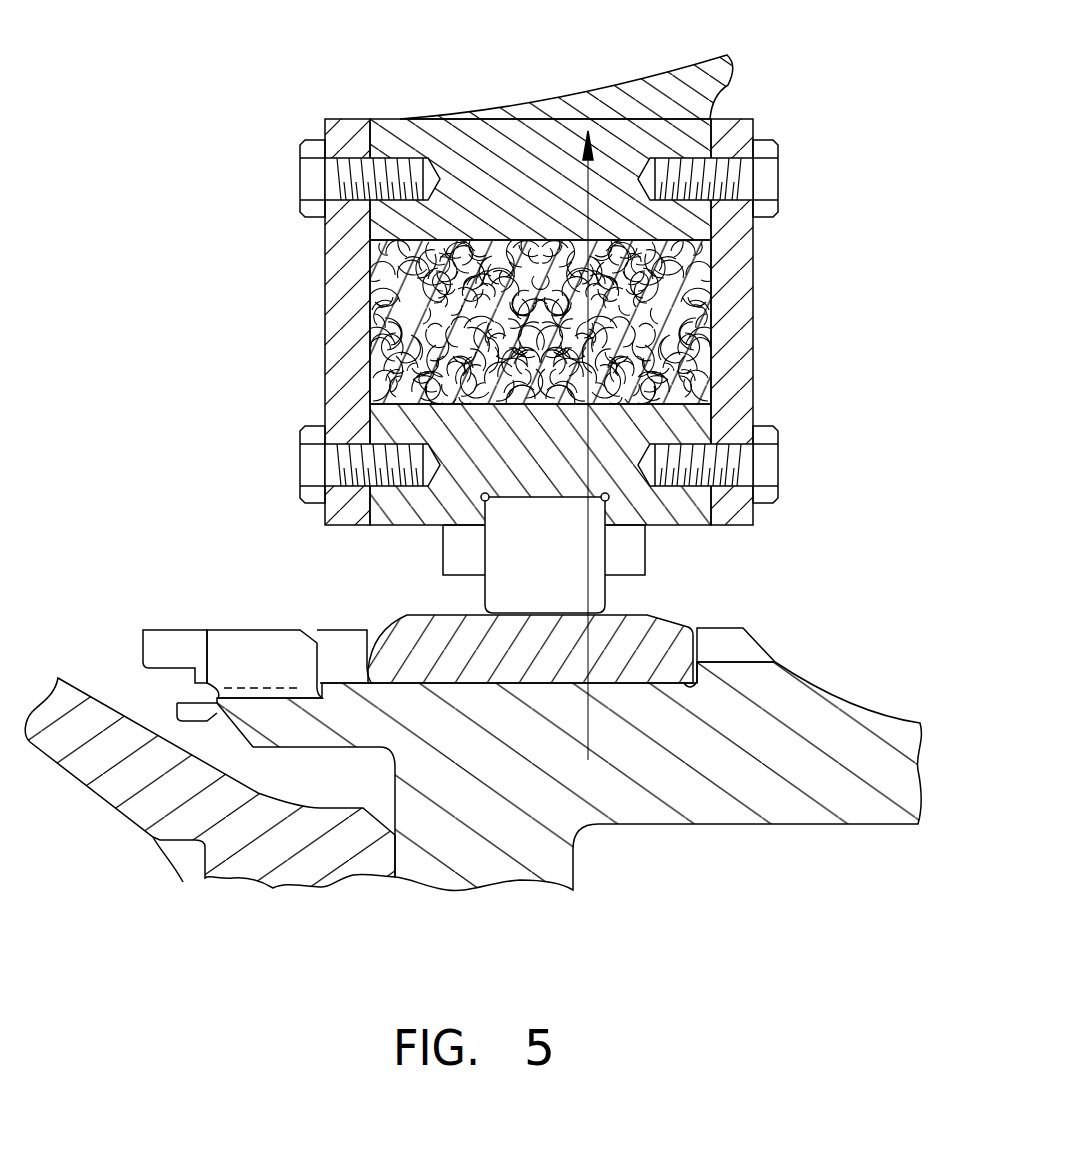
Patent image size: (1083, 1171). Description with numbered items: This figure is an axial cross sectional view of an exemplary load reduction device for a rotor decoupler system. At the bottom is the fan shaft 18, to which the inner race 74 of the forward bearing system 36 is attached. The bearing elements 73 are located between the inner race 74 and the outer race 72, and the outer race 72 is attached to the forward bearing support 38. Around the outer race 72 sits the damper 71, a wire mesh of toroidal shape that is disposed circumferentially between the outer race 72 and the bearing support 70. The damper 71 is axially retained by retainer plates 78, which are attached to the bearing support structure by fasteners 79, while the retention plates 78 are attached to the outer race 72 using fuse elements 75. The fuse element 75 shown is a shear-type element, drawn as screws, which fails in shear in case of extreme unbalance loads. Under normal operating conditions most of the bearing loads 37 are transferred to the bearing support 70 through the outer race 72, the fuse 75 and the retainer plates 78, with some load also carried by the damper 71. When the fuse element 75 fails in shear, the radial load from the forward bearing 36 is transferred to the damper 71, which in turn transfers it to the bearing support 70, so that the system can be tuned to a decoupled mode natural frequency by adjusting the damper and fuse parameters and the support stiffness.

The fan shaft 18 is at (897, 730).
The forward bearing system 36 is at (685, 569).
The bearing loads 37 is at (587, 180).
The forward bearing support 38 is at (717, 57).
The bearing support 70 is at (544, 212).
The damper 71 is at (552, 332).
The outer race 72 is at (559, 462).
The bearing elements 73 is at (559, 572).
The inner race 74 is at (413, 616).
The fuse element 75 is at (347, 443).
The retainer plates 78 is at (325, 323).
The fasteners 79 is at (300, 180).